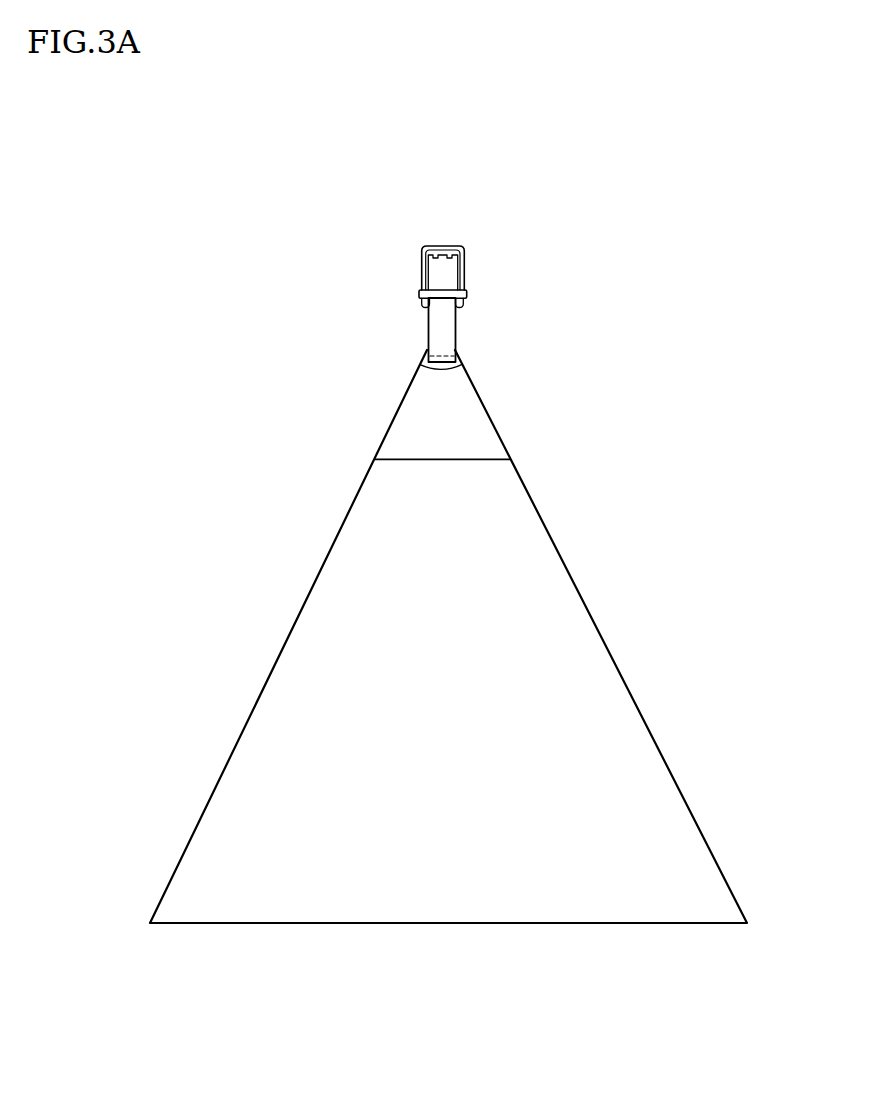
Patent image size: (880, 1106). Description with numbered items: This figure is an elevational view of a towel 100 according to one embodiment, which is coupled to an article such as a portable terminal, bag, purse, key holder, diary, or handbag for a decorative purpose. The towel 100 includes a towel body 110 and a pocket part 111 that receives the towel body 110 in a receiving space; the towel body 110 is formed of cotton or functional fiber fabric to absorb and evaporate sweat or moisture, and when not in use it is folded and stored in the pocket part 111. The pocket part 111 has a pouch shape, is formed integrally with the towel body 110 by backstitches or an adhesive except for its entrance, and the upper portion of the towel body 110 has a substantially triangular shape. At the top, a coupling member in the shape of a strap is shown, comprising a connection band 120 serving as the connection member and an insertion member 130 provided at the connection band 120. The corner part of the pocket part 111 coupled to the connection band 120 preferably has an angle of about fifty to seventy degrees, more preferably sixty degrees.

The towel 100 is at (720, 380).
The towel body 110 is at (595, 663).
The pocket part 111 is at (455, 461).
The connection band 120 is at (450, 327).
The insertion member 130 is at (450, 273).